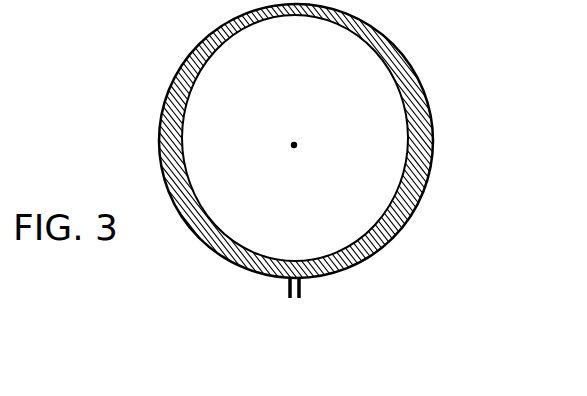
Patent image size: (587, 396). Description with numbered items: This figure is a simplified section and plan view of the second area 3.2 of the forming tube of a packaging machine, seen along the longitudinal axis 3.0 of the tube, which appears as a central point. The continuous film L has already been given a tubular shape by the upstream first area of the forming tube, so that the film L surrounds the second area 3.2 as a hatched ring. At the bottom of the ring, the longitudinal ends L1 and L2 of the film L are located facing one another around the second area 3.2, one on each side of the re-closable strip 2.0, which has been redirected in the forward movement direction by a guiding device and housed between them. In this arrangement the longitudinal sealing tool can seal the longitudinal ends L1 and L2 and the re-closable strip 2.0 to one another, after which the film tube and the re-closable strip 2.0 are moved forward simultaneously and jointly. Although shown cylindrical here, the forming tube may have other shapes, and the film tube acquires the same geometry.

The continuous film L is at (164, 106).
The longitudinal axis 3.0 is at (297, 145).
The second area 3.2 is at (428, 177).
The re-closable strip 2.0 is at (257, 316).
The longitudinal end L1 is at (287, 288).
The longitudinal end L2 is at (302, 289).